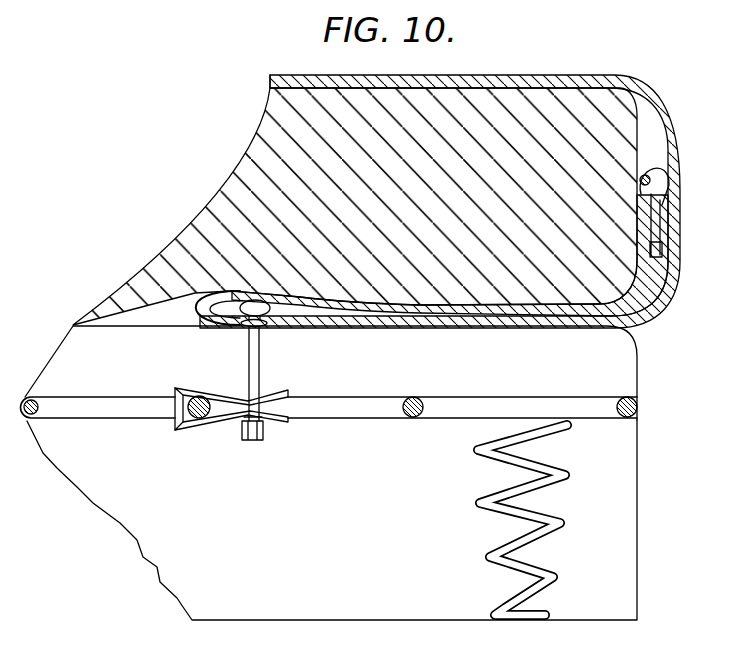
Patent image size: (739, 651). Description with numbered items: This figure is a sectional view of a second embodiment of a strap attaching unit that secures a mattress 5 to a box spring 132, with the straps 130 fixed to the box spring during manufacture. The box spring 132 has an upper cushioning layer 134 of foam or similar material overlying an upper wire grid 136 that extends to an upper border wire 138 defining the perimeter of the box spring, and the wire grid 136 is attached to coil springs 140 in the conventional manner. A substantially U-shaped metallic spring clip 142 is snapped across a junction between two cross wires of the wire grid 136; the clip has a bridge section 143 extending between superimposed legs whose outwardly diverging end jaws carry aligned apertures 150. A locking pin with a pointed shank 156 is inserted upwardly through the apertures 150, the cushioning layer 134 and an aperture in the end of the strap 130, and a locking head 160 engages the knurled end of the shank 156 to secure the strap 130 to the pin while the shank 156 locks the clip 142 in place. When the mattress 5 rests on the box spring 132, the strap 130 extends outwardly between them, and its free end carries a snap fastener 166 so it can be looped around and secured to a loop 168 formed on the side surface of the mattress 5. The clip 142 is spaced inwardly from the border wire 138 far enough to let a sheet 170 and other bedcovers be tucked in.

The mattress 5 is at (612, 104).
The strap 130 is at (655, 271).
The box spring 132 is at (640, 493).
The upper cushioning layer 134 is at (627, 367).
The upper wire grid 136 is at (417, 399).
The upper border wire 138 is at (640, 407).
The coil spring 140 is at (555, 575).
The spring clip 142 is at (173, 433).
The bridge section 143 is at (173, 405).
The apertures 150 is at (263, 392).
The shank 156 is at (251, 353).
The locking head 160 is at (256, 299).
The snap fastener 166 is at (660, 232).
The loop 168 is at (650, 183).
The sheet 170 is at (552, 298).